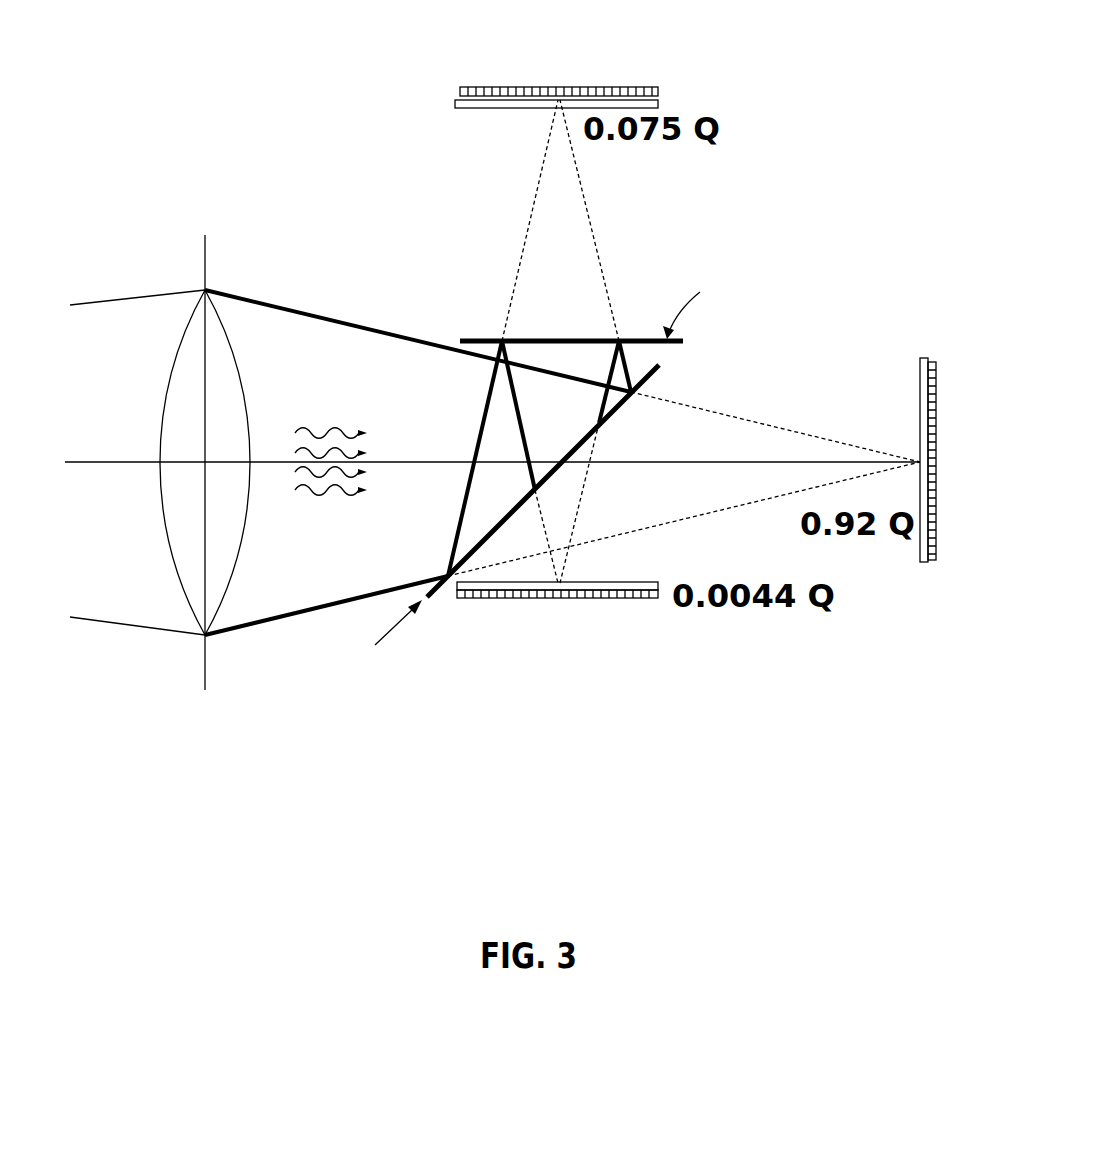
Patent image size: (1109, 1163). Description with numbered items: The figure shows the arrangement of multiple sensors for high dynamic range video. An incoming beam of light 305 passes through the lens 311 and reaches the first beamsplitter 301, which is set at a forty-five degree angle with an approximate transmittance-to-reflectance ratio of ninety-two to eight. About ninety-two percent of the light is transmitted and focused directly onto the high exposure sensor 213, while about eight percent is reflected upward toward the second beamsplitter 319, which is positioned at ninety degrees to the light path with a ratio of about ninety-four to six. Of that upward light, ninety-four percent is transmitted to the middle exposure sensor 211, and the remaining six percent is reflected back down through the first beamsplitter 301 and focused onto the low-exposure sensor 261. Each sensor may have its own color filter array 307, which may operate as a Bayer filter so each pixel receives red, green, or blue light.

The middle exposure (ME) sensor 211 is at (637, 87).
The high exposure (HE) sensor 213 is at (933, 565).
The low-exposure (LE) sensor 261 is at (643, 598).
The first beamsplitter 301 is at (657, 375).
The incoming beam of light 305 is at (322, 490).
The color filter array 307 is at (485, 107).
The lens 311 is at (178, 555).
The second beamsplitter 319 is at (487, 340).